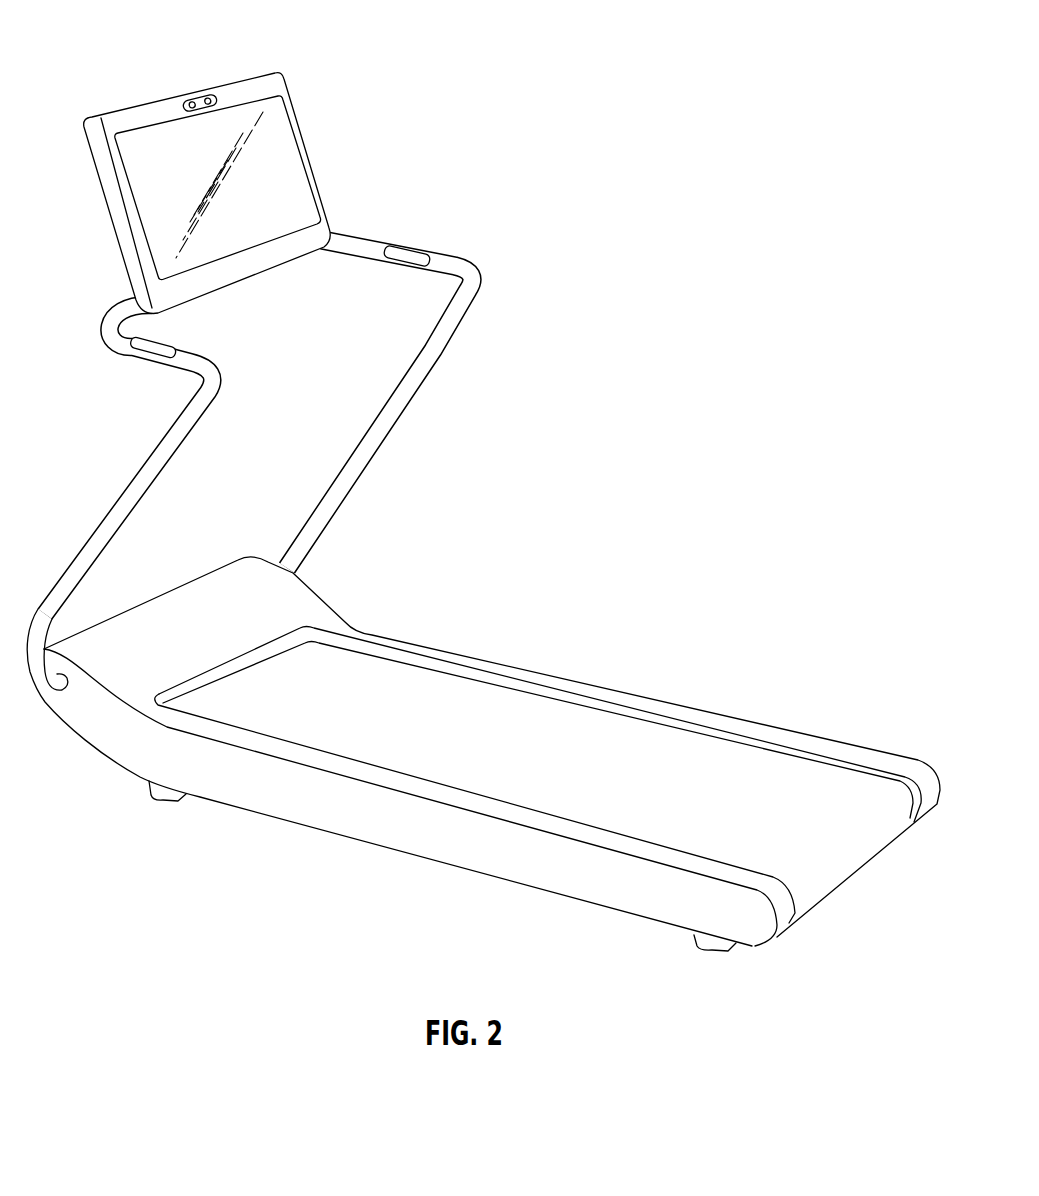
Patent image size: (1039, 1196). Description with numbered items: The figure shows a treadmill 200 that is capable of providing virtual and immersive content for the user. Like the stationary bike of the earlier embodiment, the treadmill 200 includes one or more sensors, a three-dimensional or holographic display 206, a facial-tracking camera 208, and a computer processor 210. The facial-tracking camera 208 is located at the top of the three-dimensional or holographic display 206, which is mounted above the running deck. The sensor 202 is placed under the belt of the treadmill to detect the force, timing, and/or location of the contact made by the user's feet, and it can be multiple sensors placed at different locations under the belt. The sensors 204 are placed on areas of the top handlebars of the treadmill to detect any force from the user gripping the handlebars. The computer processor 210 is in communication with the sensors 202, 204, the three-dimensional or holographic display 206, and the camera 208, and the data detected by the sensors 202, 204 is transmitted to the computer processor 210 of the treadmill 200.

The treadmill 200 is at (416, 42).
The sensor 202 is at (540, 724).
The sensors 204 is at (413, 248).
The 3-dimensional or holographic display 206 is at (278, 181).
The facial-tracking camera 208 is at (189, 88).
The computer processor 210 is at (110, 188).